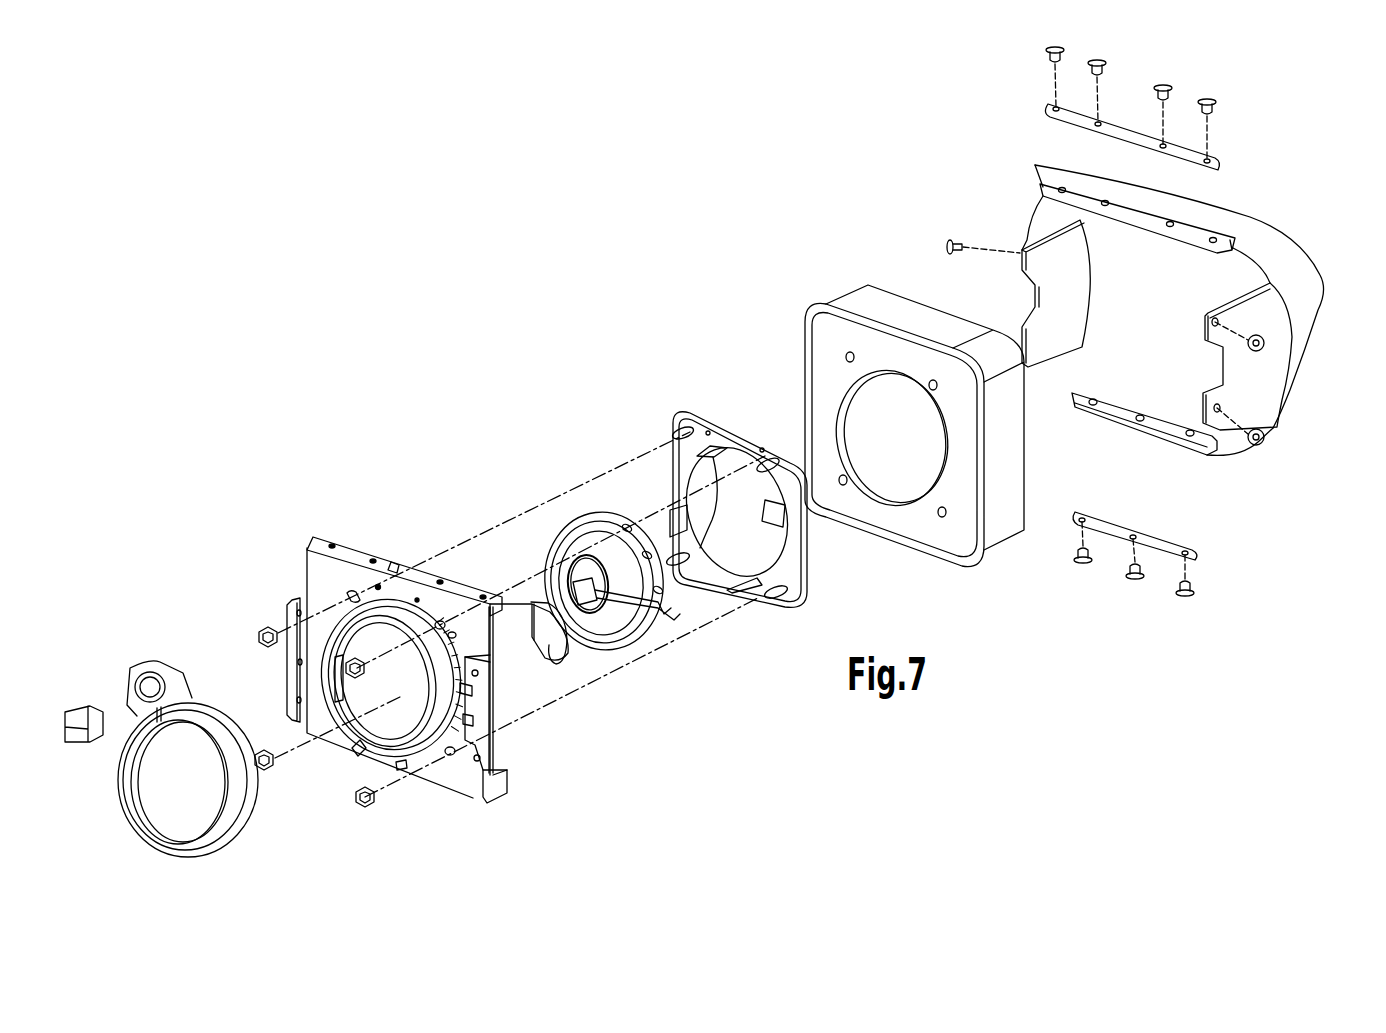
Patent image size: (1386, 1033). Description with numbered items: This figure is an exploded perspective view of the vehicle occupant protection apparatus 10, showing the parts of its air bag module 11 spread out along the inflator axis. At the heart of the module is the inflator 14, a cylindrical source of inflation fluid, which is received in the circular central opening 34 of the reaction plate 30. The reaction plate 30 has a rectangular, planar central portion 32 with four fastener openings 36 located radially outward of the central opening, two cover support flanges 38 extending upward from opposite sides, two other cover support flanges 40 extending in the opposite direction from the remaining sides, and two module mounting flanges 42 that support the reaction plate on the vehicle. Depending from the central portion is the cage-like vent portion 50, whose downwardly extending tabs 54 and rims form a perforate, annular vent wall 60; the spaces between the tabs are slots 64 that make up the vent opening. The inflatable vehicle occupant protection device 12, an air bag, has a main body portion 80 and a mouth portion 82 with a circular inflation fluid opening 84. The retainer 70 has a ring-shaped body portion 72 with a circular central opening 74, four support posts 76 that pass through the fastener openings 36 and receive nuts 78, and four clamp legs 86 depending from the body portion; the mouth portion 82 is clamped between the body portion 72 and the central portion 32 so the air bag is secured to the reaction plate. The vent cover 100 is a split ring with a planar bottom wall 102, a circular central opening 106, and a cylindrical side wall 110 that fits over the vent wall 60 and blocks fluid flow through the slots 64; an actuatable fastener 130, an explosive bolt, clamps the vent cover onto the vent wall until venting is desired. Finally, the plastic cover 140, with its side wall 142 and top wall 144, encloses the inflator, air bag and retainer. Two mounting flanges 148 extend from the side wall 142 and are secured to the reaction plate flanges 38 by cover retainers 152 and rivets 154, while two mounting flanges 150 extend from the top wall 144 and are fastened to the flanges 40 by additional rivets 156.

The vehicle occupant protection apparatus 10 is at (761, 715).
The air bag module 11 is at (697, 747).
The inflatable vehicle occupant protection device 12 is at (976, 601).
The inflator 14 is at (652, 645).
The reaction plate 30 is at (407, 667).
The central portion 32 is at (323, 577).
The central opening 34 is at (383, 637).
The fastener openings 36 is at (352, 594).
The cover support flanges 38 is at (421, 568).
The cover support flanges 40 is at (295, 600).
The module mounting flanges 42 is at (322, 536).
The vent portion 50 is at (403, 766).
The tabs 54 is at (470, 685).
The vent wall 60 is at (363, 752).
The slots 64 is at (455, 634).
The retainer 70 is at (728, 520).
The body portion 72 is at (673, 463).
The central opening 74 is at (697, 487).
The support posts 76 is at (684, 421).
The nuts 78 is at (266, 640).
The main body portion 80 is at (890, 441).
The mouth portion 82 is at (908, 518).
The inflation fluid opening 84 is at (863, 410).
The clamp legs 86 is at (738, 577).
The vent cover 100 is at (168, 780).
The bottom wall 102 is at (152, 830).
The central opening 106 is at (157, 784).
The side wall 110 is at (246, 826).
The actuatable fastener 130 is at (82, 715).
The cover 140 is at (1163, 333).
The side wall 142 is at (1235, 468).
The top wall 144 is at (1052, 210).
The mounting flanges 148 is at (1187, 252).
The mounting flanges 150 is at (1062, 282).
The cover retainers 152 is at (1215, 160).
The rivets 154 is at (1168, 86).
The rivets 156 is at (948, 246).